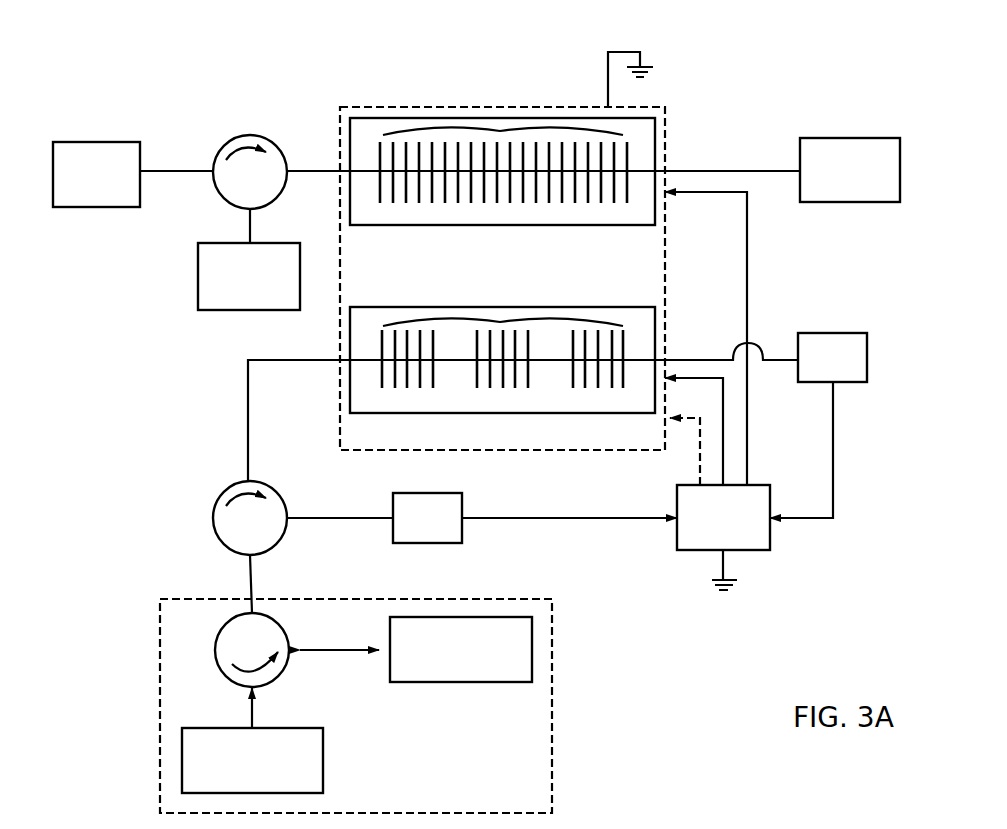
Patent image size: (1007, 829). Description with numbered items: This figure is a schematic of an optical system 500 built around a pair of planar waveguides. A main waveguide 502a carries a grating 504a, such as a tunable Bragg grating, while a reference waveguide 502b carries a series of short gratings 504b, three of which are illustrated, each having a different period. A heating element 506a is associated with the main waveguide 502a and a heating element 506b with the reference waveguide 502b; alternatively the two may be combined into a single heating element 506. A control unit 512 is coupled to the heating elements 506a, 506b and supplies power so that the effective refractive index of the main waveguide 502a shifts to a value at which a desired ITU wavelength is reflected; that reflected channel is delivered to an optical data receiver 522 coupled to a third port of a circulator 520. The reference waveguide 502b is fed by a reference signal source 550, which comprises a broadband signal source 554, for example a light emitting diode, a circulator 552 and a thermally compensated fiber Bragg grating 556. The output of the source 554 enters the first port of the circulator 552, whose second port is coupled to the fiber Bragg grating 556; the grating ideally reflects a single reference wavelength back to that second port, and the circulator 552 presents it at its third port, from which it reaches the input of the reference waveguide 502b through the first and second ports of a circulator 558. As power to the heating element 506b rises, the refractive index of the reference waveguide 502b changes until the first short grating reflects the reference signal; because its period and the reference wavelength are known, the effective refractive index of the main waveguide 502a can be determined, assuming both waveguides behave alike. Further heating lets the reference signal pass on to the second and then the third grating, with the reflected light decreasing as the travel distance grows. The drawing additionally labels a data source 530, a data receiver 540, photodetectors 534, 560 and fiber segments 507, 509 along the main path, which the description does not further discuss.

The optical system 500 is at (818, 45).
The main waveguide 502a is at (325, 171).
The reference waveguide 502b is at (325, 360).
The grating 504a is at (500, 131).
The series of short gratings 504b is at (500, 322).
The heating element 506 is at (392, 107).
The heating element 506a is at (655, 140).
The heating element 506b is at (655, 318).
The input fiber 507 is at (168, 171).
The output fiber 509 is at (752, 171).
The control unit 512 is at (752, 485).
The circulator 520 is at (247, 135).
The optical data receiver 522 is at (272, 243).
The data source 530 is at (118, 142).
The photodetector 534 is at (850, 333).
The data receiver 540 is at (886, 138).
The reference signal source 550 is at (512, 599).
The circulator 552 is at (216, 636).
The broadband signal source 554 is at (298, 728).
The thermally compensated fiber Bragg grating 556 is at (452, 682).
The circulator 558 is at (228, 492).
The photodetector 560 is at (455, 493).